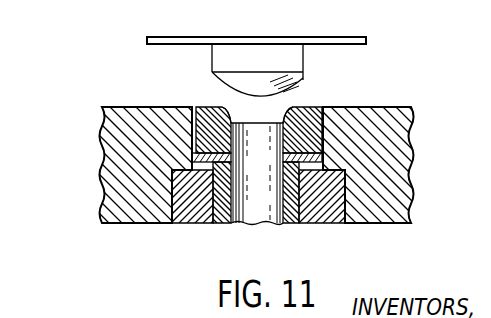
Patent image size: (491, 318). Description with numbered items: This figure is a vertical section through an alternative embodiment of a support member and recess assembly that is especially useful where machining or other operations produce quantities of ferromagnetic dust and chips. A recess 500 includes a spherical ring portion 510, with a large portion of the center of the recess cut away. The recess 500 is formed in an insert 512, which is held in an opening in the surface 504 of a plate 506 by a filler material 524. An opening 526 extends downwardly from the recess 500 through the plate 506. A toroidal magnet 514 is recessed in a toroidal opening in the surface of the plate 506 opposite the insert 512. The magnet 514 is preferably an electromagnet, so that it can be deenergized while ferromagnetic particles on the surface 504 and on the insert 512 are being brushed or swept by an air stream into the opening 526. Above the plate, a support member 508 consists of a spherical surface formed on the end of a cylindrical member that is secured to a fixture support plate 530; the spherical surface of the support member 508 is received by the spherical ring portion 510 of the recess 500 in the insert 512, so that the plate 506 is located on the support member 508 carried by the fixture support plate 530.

The recess 500 is at (292, 103).
The surface 504 is at (393, 107).
The plate 506 is at (101, 165).
The support member 508 is at (303, 80).
The spherical ring portion 510 is at (223, 108).
The insert 512 is at (312, 107).
The toroidal magnet 514 is at (191, 223).
The filler material 524 is at (199, 108).
The opening 526 is at (272, 223).
The fixture support plate 530 is at (233, 36).